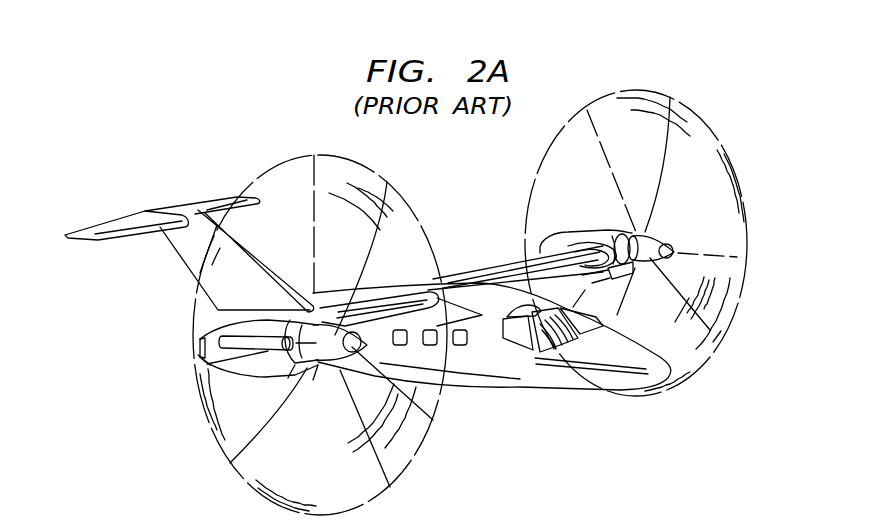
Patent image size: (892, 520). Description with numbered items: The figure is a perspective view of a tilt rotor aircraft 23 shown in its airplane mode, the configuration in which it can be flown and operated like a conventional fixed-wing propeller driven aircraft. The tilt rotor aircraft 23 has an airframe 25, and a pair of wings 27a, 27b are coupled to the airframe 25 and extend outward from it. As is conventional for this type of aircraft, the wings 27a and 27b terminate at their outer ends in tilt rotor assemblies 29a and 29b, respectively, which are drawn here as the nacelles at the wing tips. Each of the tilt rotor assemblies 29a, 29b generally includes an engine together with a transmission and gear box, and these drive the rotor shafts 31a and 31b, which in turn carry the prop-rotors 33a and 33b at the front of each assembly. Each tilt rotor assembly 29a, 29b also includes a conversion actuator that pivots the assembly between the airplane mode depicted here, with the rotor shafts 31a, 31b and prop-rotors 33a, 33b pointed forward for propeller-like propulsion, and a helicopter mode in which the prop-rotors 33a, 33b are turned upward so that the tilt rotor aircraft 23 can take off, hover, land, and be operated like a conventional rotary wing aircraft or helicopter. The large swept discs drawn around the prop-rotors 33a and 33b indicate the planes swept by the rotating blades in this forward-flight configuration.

The tilt rotor aircraft 23 is at (283, 120).
The airframe 25 is at (558, 376).
The wing 27a is at (402, 297).
The wing 27b is at (495, 267).
The tilt rotor assembly 29a is at (266, 376).
The tilt rotor assembly 29b is at (573, 233).
The rotor shaft 31a is at (293, 319).
The rotor shaft 31b is at (611, 233).
The prop-rotor 33a is at (337, 367).
The prop-rotor 33b is at (645, 234).